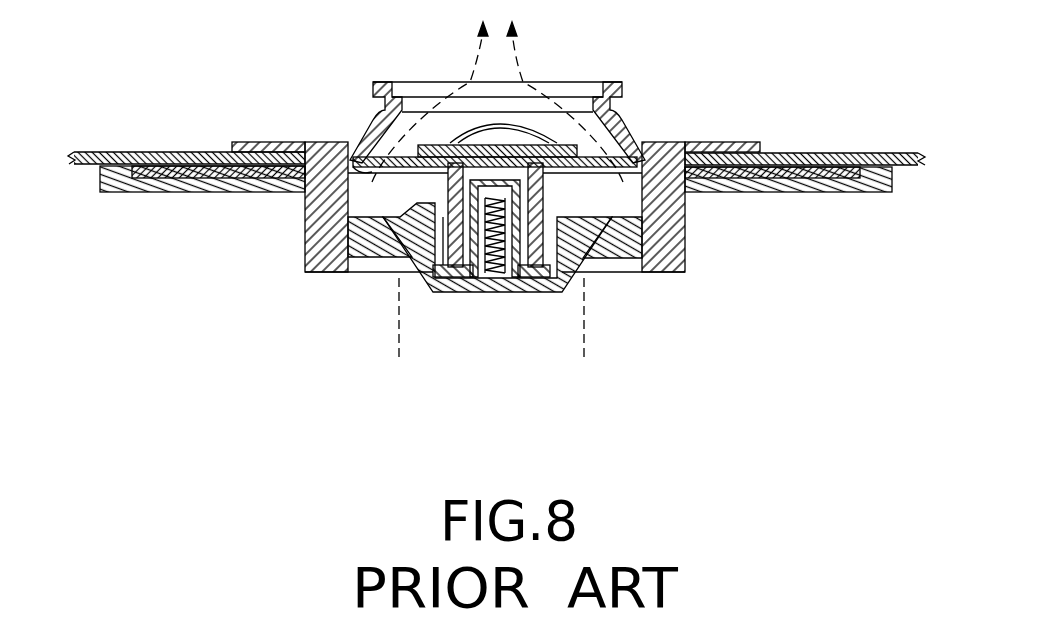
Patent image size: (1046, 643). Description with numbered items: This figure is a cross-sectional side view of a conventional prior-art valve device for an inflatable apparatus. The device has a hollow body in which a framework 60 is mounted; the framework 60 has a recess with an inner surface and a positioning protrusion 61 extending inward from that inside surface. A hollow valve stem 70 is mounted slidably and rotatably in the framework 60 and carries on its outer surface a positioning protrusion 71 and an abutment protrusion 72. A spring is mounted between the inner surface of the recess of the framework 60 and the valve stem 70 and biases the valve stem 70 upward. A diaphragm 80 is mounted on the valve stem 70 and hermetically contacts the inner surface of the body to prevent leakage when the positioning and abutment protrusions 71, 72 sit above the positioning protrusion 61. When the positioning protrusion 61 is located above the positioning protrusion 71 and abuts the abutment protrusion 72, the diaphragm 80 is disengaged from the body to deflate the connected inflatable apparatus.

The framework 60 is at (607, 260).
The positioning protrusion 61 is at (432, 200).
The valve stem 70 is at (588, 278).
The positioning protrusion 71 is at (402, 275).
The abutment protrusion 72 is at (443, 205).
The diaphragm 80 is at (633, 125).